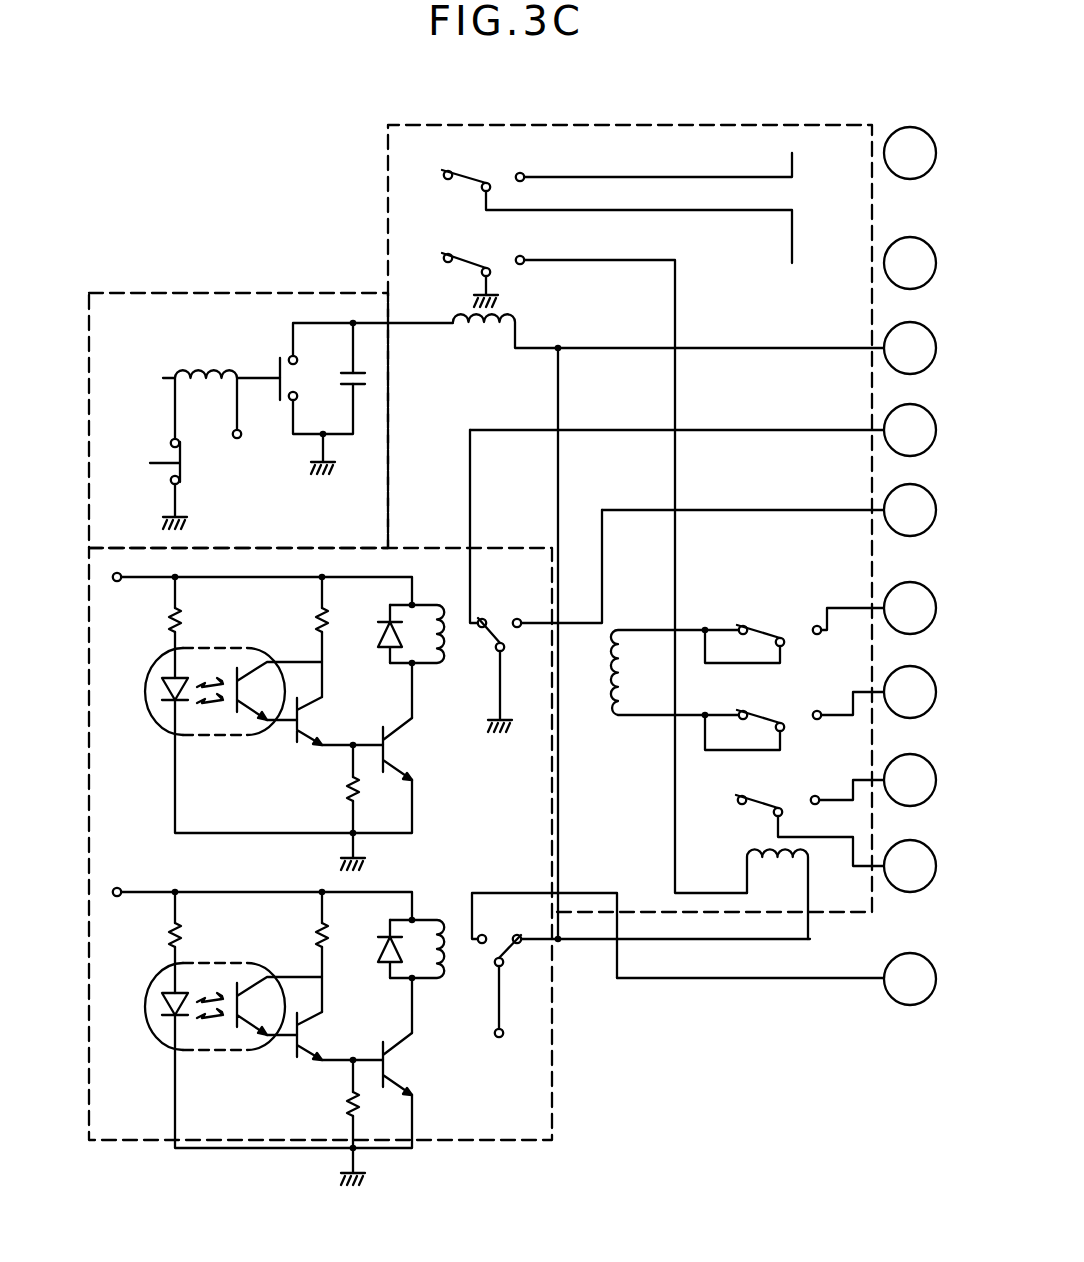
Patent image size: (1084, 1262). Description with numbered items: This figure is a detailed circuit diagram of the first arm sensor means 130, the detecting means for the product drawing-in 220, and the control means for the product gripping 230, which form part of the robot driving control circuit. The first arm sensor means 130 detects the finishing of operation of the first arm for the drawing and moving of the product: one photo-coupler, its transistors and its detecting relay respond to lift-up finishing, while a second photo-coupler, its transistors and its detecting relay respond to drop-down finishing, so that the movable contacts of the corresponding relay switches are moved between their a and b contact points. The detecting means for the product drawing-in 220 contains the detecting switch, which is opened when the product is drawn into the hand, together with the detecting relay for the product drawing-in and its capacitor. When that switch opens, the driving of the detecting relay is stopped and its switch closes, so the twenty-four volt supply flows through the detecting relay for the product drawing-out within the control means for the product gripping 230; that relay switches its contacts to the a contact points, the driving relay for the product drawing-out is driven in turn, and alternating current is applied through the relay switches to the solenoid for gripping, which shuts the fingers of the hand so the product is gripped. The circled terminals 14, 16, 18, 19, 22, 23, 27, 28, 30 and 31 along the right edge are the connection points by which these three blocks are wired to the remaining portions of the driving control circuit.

The first arm sensor means 130 is at (553, 1082).
The detecting means for the product drawing-in 220 is at (104, 293).
The control means for the product gripping 230 is at (388, 190).
The terminal 14 is at (910, 430).
The terminal 16 is at (910, 348).
The terminal 18 is at (910, 153).
The terminal 19 is at (910, 263).
The terminal 22 is at (910, 979).
The terminal 23 is at (910, 510).
The terminal 27 is at (910, 780).
The terminal 28 is at (910, 866).
The terminal 30 is at (910, 608).
The terminal 31 is at (910, 692).